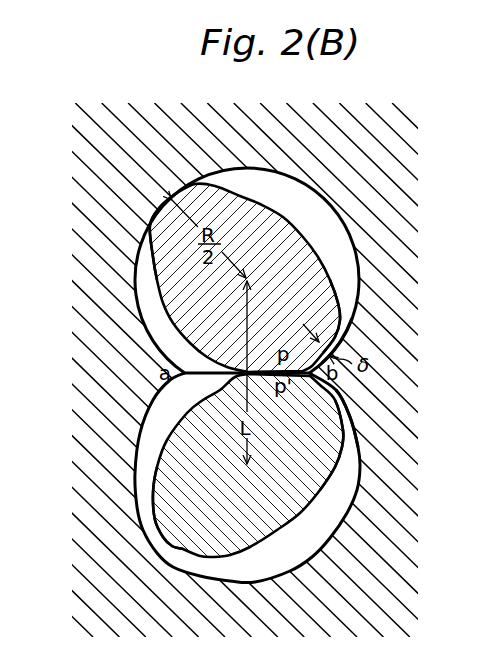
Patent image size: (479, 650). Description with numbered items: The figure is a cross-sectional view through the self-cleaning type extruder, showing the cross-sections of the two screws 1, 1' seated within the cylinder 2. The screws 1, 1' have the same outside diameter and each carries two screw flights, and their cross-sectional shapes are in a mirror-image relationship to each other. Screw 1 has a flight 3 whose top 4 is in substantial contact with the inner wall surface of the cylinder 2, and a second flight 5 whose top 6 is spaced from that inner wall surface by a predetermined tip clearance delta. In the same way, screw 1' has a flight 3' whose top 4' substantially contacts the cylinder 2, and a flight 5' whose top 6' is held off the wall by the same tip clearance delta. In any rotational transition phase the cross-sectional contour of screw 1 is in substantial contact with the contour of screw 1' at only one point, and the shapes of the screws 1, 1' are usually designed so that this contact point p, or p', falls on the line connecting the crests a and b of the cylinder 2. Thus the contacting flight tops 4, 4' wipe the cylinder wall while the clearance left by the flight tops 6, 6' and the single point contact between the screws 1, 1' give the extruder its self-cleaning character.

The screw 1 is at (245, 257).
The screw 1' is at (275, 465).
The cylinder 2 is at (390, 176).
The flight 3 is at (109, 237).
The flight 3' is at (117, 544).
The top of flight 4 is at (201, 270).
The top of flight 4' is at (201, 478).
The flight 5 is at (386, 313).
The flight 5' is at (386, 443).
The top of flight 6 is at (386, 340).
The top of flight 6' is at (395, 404).